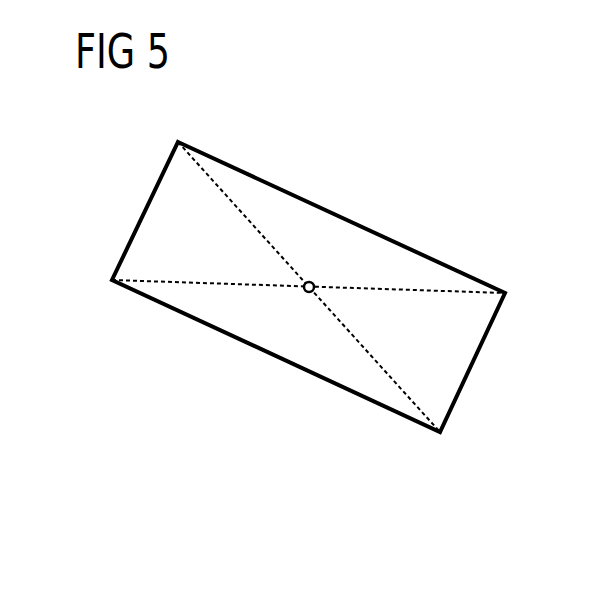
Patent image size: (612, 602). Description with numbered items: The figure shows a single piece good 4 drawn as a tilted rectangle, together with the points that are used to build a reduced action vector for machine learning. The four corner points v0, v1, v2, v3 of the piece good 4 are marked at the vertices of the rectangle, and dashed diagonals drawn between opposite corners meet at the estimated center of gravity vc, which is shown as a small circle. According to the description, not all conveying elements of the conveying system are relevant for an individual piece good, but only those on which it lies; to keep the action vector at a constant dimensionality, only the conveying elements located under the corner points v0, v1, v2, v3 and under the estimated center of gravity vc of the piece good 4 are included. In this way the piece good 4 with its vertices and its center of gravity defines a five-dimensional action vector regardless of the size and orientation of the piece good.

The piece good 4 is at (342, 215).
The corner point v0 is at (172, 128).
The corner point v1 is at (96, 283).
The corner point v2 is at (447, 450).
The corner point v3 is at (524, 290).
The estimated center of gravity vc is at (318, 272).